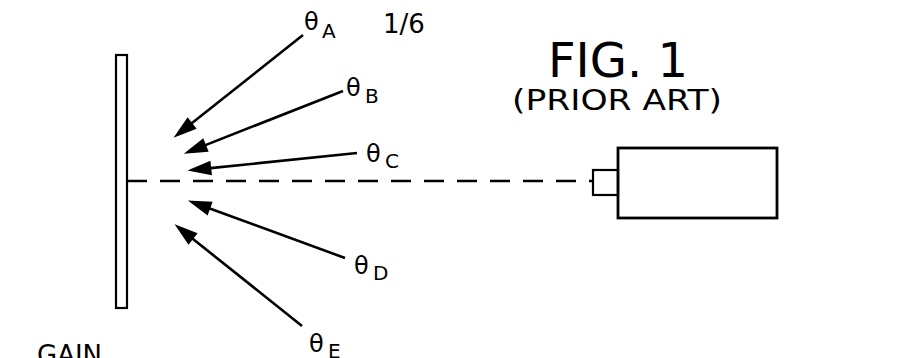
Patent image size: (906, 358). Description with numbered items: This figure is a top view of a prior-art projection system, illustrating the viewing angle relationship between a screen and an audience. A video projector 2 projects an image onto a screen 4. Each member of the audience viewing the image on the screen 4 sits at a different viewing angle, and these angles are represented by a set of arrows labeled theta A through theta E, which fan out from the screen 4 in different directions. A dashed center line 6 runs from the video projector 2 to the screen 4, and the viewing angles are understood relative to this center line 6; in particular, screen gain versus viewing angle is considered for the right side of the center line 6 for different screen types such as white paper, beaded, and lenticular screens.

The video projector 2 is at (688, 210).
The screen 4 is at (127, 181).
The center line 6 is at (500, 180).